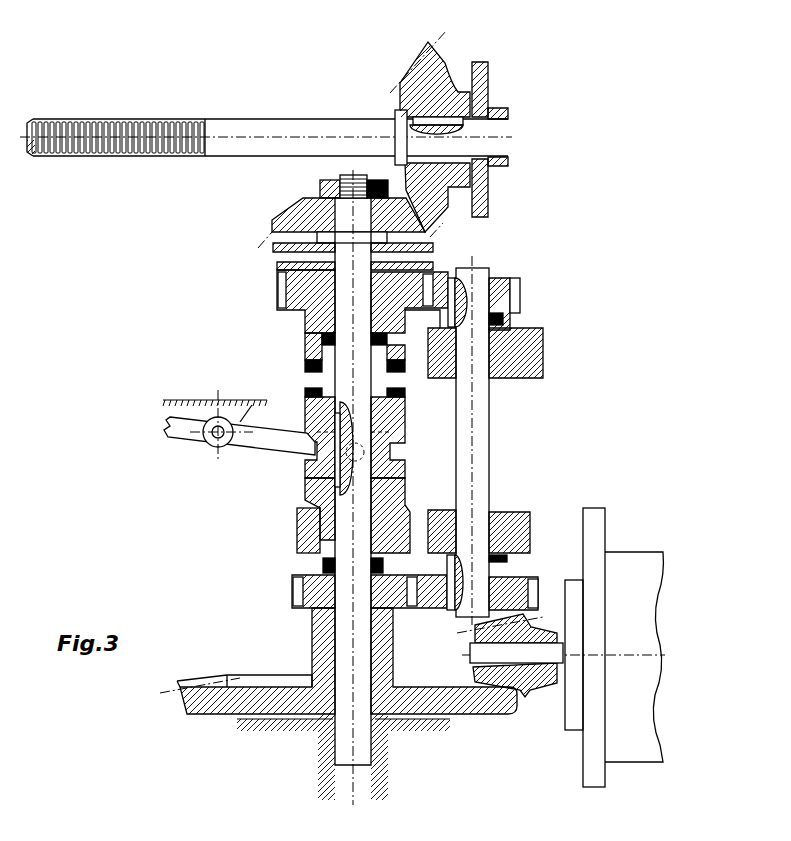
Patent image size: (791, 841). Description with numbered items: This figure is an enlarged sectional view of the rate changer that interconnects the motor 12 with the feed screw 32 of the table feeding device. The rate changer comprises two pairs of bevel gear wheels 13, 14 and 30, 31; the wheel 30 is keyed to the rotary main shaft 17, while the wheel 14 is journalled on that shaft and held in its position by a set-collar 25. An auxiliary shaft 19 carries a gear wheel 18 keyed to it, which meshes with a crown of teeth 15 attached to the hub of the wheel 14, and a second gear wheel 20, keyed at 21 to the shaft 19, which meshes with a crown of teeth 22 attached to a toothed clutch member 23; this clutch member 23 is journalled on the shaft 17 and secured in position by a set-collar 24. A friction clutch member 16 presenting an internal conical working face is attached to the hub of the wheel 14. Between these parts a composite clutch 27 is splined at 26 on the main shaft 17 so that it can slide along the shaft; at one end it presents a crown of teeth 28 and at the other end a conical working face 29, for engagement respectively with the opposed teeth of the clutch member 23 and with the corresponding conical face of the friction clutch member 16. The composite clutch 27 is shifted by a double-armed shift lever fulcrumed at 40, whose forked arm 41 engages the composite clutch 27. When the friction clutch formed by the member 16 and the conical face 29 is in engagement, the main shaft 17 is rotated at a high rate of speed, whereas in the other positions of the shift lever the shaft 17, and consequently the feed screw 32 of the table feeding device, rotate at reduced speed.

The motor 12 is at (638, 575).
The bevel gear wheel 13 is at (522, 690).
The bevel gear wheel 14 is at (473, 707).
The crown of teeth 15 is at (317, 598).
The friction clutch member 16 is at (298, 528).
The rotary shaft 17 is at (347, 742).
The gear wheel 18 is at (528, 590).
The auxiliary shaft 19 is at (472, 433).
The gear wheel 20 is at (507, 292).
The key 21 is at (455, 302).
The crown of teeth 22 is at (278, 288).
The toothed clutch member 23 is at (307, 364).
The set-collar 24 is at (320, 338).
The set-collar 25 is at (315, 562).
The spline 26 is at (371, 480).
The composite clutch 27 is at (307, 413).
The crown of teeth 28 is at (308, 390).
The conical working face 29 is at (307, 497).
The bevel gear wheel 30 is at (303, 207).
The bevel gear wheel 31 is at (440, 70).
The feed screw 32 is at (238, 130).
The fulcrum 40 is at (217, 435).
The forked arm 41 is at (275, 437).